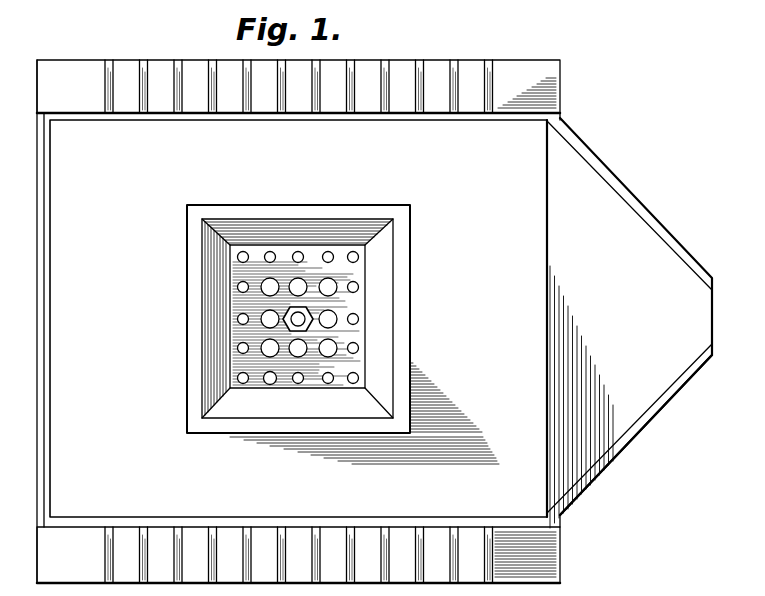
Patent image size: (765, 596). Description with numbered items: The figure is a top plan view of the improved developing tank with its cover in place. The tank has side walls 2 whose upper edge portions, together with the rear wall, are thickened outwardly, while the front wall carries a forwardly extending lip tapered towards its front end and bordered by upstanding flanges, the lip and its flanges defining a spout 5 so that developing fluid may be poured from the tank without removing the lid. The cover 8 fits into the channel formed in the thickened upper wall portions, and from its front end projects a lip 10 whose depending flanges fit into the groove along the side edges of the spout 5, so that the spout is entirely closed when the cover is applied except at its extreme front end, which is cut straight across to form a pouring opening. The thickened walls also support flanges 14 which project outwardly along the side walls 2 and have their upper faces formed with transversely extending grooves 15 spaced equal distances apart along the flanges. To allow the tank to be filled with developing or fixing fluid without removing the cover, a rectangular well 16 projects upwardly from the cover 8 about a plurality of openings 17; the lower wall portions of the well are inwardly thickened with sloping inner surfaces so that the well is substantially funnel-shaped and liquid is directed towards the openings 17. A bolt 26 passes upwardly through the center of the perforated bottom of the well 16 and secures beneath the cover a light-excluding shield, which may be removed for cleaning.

The side walls 2 is at (530, 117).
The spout 5 is at (632, 440).
The cover 8 is at (530, 158).
The lip 10 is at (626, 237).
The flanges 14 is at (532, 73).
The transversely extending grooves 15 is at (178, 115).
The well 16 is at (400, 305).
The openings 17 is at (358, 348).
The bolt 26 is at (303, 311).